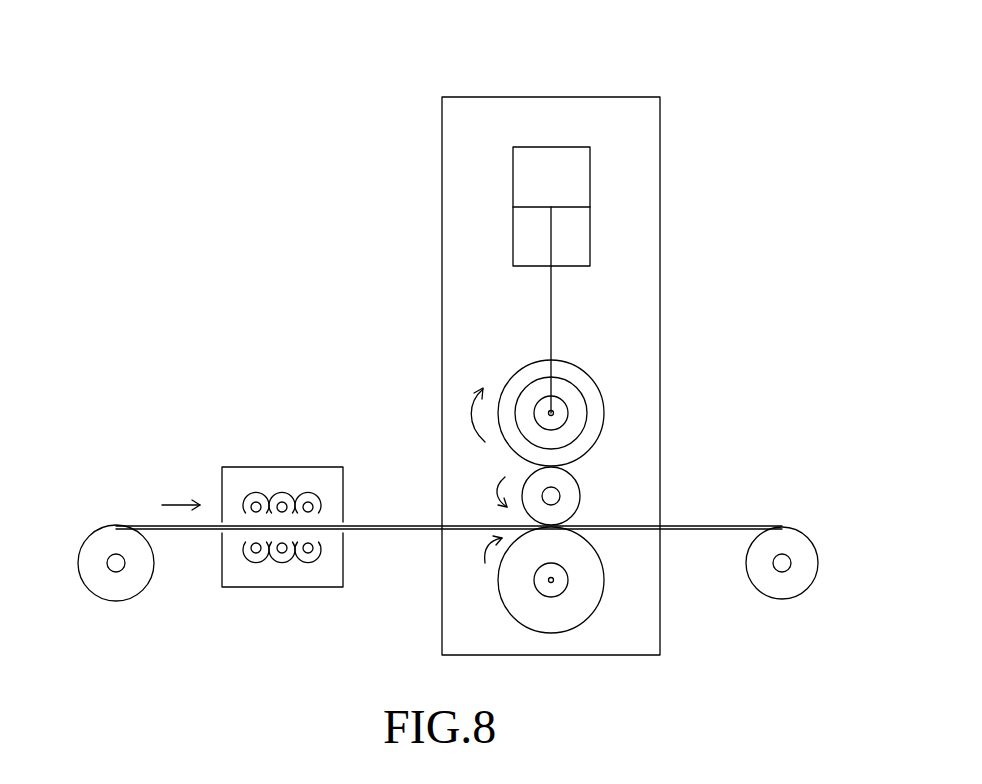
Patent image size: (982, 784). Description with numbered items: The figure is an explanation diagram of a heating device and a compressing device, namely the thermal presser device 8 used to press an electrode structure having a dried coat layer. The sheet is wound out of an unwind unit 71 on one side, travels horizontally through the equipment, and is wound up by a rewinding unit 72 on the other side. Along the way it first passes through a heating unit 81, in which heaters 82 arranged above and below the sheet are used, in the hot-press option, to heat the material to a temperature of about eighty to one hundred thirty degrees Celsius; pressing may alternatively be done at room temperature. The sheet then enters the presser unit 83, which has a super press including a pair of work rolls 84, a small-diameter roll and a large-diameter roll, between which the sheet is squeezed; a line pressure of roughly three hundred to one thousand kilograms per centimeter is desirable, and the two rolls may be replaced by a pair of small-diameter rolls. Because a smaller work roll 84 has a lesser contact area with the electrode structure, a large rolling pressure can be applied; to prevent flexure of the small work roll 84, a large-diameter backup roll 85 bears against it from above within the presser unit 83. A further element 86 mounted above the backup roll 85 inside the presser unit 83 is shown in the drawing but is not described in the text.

The thermal presser device 8 is at (581, 94).
The unwind unit 71 is at (110, 600).
The rewinding unit 72 is at (785, 598).
The heating unit 81 is at (253, 467).
The heaters 82 is at (307, 492).
The presser unit 83 is at (660, 226).
The work rolls 84 is at (580, 496).
The backup roll 85 is at (599, 391).
The cylinder 86 is at (590, 178).